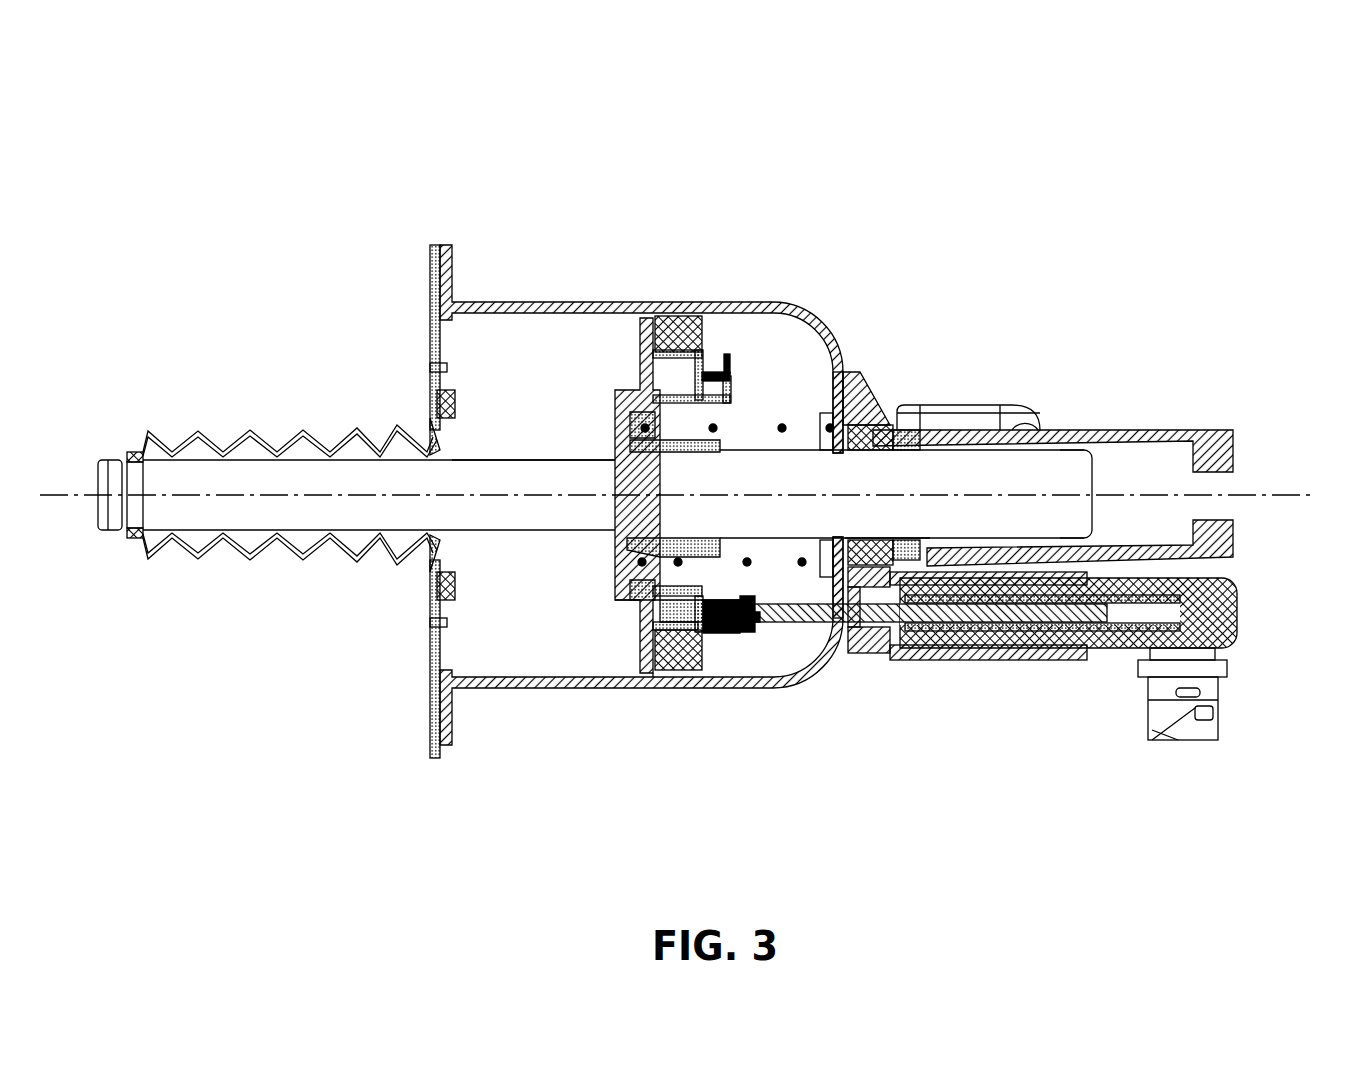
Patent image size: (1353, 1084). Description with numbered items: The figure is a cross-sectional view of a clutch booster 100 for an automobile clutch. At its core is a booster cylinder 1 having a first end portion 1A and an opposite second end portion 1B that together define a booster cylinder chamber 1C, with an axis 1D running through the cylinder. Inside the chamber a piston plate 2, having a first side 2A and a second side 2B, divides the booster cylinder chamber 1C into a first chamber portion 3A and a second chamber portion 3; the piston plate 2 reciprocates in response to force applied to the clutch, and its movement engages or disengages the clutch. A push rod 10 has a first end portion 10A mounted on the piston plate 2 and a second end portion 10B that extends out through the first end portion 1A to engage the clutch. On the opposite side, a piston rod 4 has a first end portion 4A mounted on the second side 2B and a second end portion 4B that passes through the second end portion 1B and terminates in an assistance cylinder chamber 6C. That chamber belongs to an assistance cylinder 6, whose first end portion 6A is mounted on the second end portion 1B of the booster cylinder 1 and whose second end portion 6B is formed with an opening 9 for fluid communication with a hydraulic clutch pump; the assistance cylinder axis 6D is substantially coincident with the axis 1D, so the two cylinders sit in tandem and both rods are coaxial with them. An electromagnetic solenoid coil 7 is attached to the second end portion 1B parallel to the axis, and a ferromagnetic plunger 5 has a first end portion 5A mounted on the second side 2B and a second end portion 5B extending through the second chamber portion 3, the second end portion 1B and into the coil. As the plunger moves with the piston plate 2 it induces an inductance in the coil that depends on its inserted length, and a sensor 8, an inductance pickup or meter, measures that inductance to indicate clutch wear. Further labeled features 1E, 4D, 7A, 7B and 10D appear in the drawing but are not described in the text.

The clutch booster 100 is at (700, 81).
The booster cylinder 1 is at (512, 448).
The first end portion of booster cylinder 1A is at (483, 301).
The second end portion of booster cylinder 1B is at (832, 303).
The booster cylinder chamber 1C is at (520, 646).
The axis of booster cylinder 1D is at (528, 492).
The mounting flange seal 1E is at (176, 430).
The piston plate 2 is at (668, 461).
The first side of piston plate 2A is at (624, 644).
The second side of piston plate 2B is at (722, 660).
The second chamber portion 3 is at (709, 404).
The first chamber portion 3A is at (584, 336).
The piston rod 4 is at (890, 463).
The first end portion of piston rod 4A is at (678, 516).
The second end portion of piston rod 4B is at (1076, 464).
The output rod guide portion 4D is at (893, 522).
The ferromagnetic plunger 5 is at (908, 453).
The first end portion of ferromagnetic plunger 5A is at (772, 622).
The second end portion of ferromagnetic plunger 5B is at (1100, 648).
The assistance cylinder 6 is at (1083, 368).
The first end portion of assistance cylinder 6A is at (849, 418).
The second end portion of assistance cylinder 6B is at (1223, 440).
The assistance cylinder chamber 6C is at (1147, 465).
The axis of assistance cylinder 6D is at (1178, 557).
The electromagnetic solenoid coil 7 is at (1030, 451).
The push rod shaft 7A is at (915, 576).
The push rod bushing 7B is at (1238, 611).
The sensor 8 is at (1178, 690).
The opening 9 is at (1222, 495).
The push rod 10 is at (355, 403).
The first end portion of push rod 10A is at (557, 515).
The second end portion of push rod 10B is at (112, 520).
The input rod shaft 10D is at (330, 505).